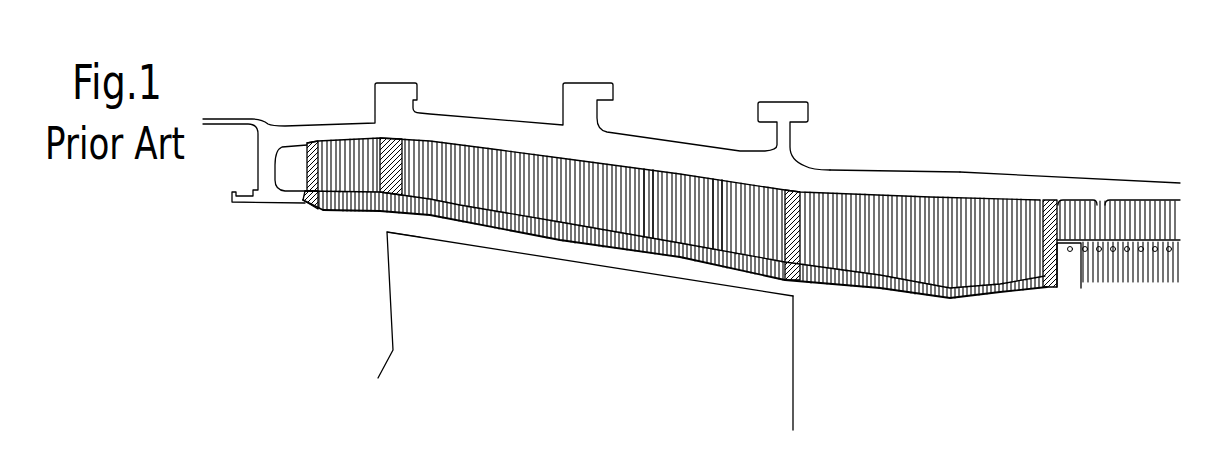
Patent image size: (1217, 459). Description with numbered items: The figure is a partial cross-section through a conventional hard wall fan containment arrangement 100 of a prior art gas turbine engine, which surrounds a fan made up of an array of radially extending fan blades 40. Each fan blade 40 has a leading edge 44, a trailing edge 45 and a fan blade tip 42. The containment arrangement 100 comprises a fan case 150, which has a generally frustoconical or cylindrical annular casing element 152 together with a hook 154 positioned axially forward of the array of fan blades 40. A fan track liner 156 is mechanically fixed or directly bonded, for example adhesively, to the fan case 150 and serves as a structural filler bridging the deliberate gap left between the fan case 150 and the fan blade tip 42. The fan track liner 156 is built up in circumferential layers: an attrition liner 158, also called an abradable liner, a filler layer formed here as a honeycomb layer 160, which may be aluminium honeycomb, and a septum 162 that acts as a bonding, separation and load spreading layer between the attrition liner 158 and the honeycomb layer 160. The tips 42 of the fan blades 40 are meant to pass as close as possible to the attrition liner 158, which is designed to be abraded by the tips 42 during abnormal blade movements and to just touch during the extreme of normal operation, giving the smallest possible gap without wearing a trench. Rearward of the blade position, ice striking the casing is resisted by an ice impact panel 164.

The hard wall fan containment arrangement 100 is at (834, 66).
The fan case 150 is at (897, 179).
The annular casing element 152 is at (1017, 180).
The hook 154 is at (277, 193).
The fan track liner 156 is at (423, 144).
The fan blade tip 42 is at (460, 230).
The honeycomb layer 160 is at (649, 188).
The septum 162 is at (715, 182).
The attrition liner 158 is at (553, 238).
The ice impact panel 164 is at (1002, 288).
The fan blade 40 is at (432, 312).
The leading edge 44 is at (364, 256).
The trailing edge 45 is at (795, 372).